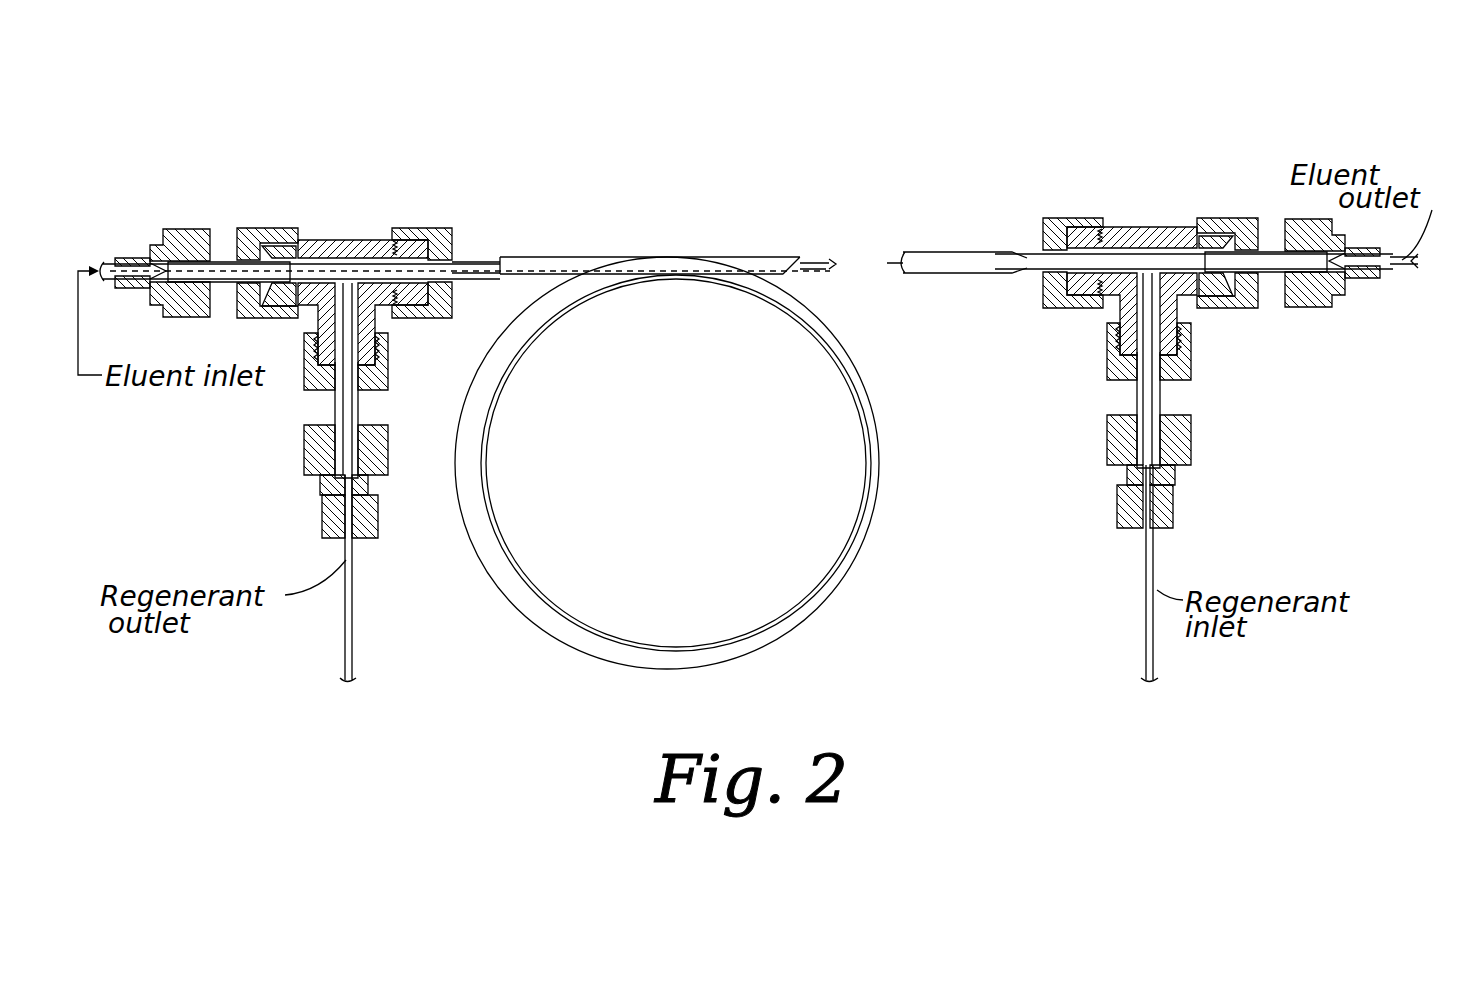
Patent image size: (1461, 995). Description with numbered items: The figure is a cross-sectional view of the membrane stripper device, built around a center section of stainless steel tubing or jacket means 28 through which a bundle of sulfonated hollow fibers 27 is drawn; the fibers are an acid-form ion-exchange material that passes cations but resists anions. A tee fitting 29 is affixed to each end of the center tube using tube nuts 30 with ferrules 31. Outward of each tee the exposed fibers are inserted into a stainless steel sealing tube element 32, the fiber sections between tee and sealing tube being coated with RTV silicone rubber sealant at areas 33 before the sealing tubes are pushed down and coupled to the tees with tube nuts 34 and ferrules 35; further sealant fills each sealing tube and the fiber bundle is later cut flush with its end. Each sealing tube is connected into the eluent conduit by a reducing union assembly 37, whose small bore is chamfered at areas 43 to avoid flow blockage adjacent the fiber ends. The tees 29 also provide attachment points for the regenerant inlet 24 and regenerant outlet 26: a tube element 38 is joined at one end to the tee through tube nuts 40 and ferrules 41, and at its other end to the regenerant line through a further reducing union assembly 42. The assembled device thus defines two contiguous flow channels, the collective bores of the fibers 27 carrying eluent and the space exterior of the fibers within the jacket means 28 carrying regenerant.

The regenerant inlet 24 is at (1148, 645).
The regenerant outlet 26 is at (354, 674).
The hollow fibers 27 is at (902, 258).
The jacket means 28 is at (723, 257).
The tee fitting 29 is at (345, 240).
The tube nut 30 is at (430, 230).
The ferrule 31 is at (424, 300).
The sealing tube element 32 is at (216, 265).
The sealant area 33 is at (222, 283).
The tube nut 34 is at (262, 228).
The ferrule 35 is at (283, 250).
The reducing union assembly 37 is at (138, 240).
The tube element 38 is at (358, 412).
The tube nut 40 is at (378, 374).
The ferrule 41 is at (320, 351).
The reducing union assembly 42 is at (371, 482).
The chamfered area 43 is at (160, 284).